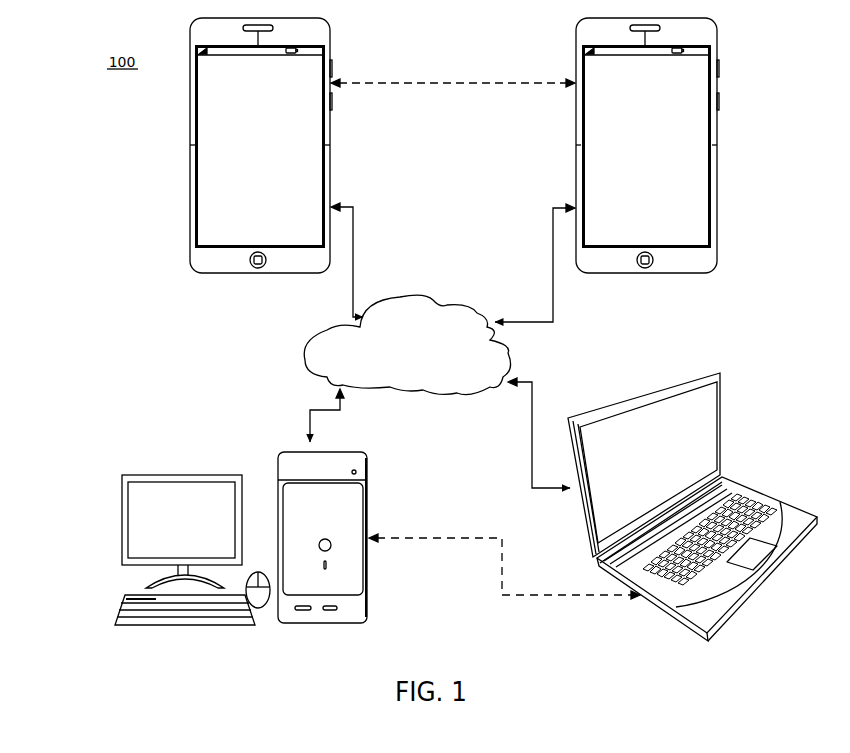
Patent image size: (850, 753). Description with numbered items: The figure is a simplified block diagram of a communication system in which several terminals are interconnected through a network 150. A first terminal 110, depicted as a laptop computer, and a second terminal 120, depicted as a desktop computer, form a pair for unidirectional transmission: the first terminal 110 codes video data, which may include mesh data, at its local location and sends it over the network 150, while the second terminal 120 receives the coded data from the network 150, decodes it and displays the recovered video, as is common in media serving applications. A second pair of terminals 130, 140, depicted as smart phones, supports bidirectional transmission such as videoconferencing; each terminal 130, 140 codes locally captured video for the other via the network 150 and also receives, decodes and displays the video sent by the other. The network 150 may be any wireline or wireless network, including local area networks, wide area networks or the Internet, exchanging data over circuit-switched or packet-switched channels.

The first terminal 110 is at (722, 404).
The second terminal 120 is at (367, 597).
The terminal 130 is at (236, 145).
The terminal 140 is at (577, 101).
The network 150 is at (391, 342).